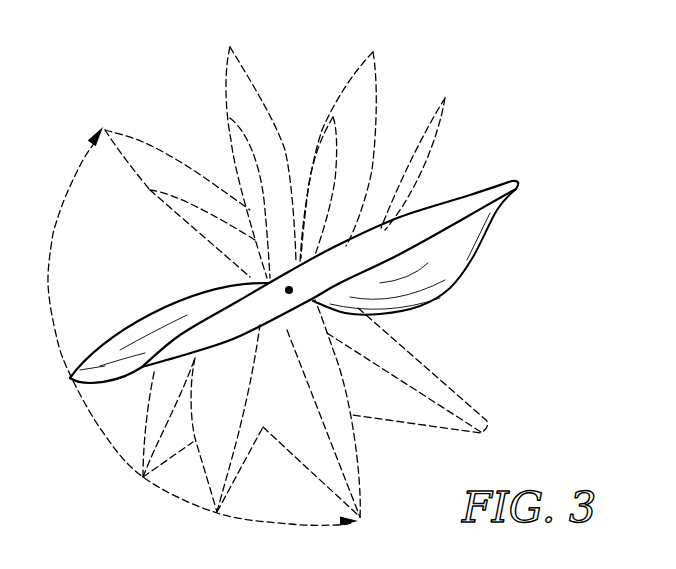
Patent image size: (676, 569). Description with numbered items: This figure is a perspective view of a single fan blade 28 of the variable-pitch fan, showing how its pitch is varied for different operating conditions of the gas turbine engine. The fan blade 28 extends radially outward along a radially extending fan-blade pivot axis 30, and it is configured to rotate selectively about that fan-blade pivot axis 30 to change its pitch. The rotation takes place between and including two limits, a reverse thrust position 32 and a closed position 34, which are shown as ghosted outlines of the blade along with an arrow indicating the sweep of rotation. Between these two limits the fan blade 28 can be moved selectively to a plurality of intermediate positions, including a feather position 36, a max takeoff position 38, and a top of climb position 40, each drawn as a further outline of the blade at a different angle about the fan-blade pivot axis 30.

The fan blade 28 is at (484, 268).
The fan-blade pivot axis 30 is at (289, 288).
The reverse thrust position 32 is at (143, 143).
The closed position 34 is at (365, 487).
The feather position 36 is at (163, 307).
The max takeoff (MTO) position 38 is at (147, 409).
The top of climb (TOC) position 40 is at (167, 476).